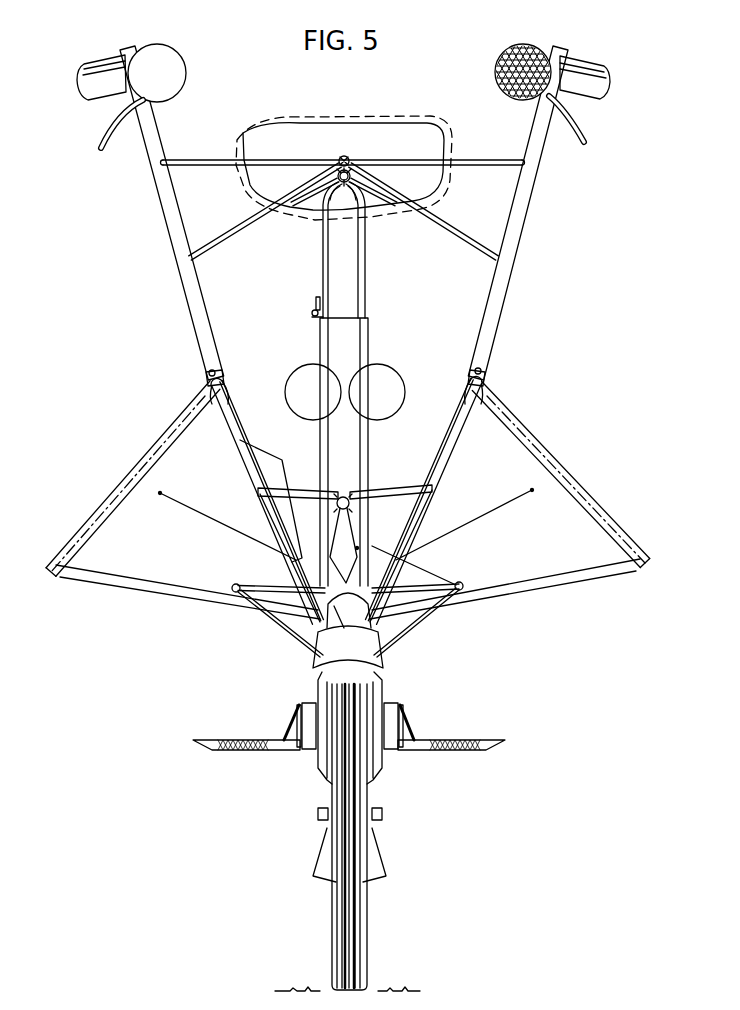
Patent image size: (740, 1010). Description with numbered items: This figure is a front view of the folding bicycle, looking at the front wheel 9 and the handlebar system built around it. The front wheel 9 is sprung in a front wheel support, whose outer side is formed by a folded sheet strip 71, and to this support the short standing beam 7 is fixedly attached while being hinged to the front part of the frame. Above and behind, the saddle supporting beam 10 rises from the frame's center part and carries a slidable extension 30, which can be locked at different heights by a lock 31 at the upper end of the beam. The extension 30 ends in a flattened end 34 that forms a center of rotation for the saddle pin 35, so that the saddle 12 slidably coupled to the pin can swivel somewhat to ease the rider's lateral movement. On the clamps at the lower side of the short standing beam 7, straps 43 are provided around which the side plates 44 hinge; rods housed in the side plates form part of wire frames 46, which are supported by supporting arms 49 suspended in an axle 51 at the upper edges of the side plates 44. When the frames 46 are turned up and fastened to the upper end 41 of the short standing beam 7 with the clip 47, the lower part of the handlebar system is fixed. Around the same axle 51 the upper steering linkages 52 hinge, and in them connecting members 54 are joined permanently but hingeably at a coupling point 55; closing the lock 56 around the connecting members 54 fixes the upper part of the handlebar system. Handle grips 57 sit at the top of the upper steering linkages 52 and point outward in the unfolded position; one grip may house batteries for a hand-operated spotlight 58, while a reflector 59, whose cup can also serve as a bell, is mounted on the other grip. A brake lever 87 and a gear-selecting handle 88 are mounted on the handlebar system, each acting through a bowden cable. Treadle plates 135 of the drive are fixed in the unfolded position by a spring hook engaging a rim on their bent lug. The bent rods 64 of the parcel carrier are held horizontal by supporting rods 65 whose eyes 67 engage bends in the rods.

The short standing beam 7 is at (357, 548).
The front wheel 9 is at (345, 913).
The saddle supporting beam 10 is at (350, 350).
The saddle 12 is at (258, 135).
The slidable extension 30 is at (350, 263).
The lock 31 is at (313, 311).
The flattened end 34 is at (340, 180).
The saddle pin 35 is at (344, 174).
The upper end of short standing beam 41 is at (350, 498).
The straps 43 is at (323, 617).
The side plates 44 is at (265, 518).
The frames 46 is at (258, 458).
The clip 47 is at (357, 505).
The supporting arm 49 is at (215, 410).
The axle 51 is at (488, 372).
The upper steering linkage 52 is at (192, 300).
The connecting members 54 is at (475, 160).
The coupling point 55 is at (348, 168).
The lock 56 is at (341, 156).
The handle grips 57 is at (95, 62).
The spotlight 58 is at (162, 63).
The reflector 59 is at (533, 55).
The bent rods 64 is at (278, 587).
The supporting rods 65 is at (405, 638).
The eyes 67 is at (233, 591).
The strip 71 is at (328, 632).
The brake lever 87 is at (583, 128).
The handle 88 is at (95, 133).
The treadle plate 135 is at (203, 748).